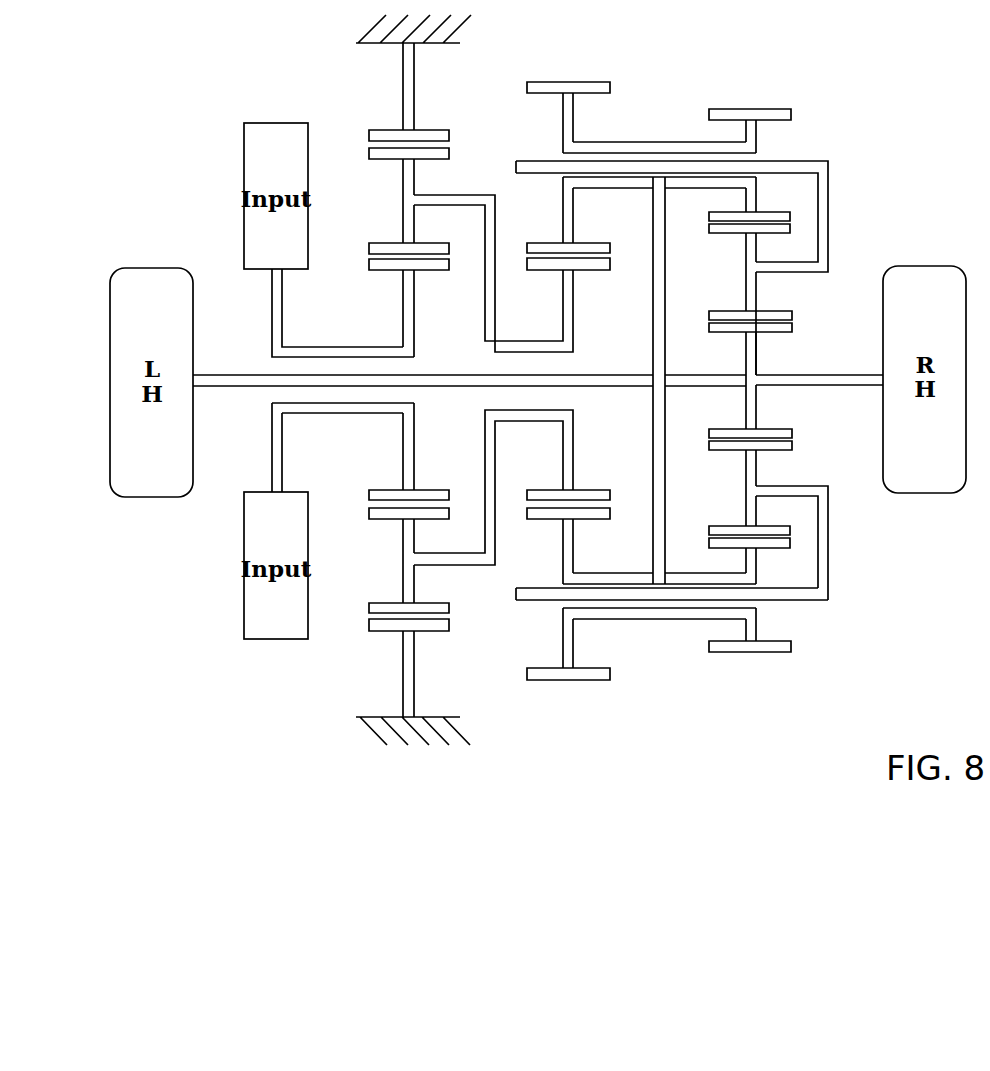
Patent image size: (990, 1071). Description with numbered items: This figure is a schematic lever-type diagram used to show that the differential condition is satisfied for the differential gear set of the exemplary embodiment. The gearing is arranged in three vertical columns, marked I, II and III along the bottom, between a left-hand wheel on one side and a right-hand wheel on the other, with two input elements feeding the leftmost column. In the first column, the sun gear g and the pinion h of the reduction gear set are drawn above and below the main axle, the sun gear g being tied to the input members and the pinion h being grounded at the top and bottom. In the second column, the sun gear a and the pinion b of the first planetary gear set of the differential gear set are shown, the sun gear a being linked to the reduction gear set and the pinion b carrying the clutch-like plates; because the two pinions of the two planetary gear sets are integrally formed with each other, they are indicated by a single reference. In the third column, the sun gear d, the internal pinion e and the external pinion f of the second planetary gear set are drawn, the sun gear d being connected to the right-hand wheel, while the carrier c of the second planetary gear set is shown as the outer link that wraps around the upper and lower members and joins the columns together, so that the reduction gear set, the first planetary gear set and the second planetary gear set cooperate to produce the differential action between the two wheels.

The sun gear of the first planetary gear set a is at (493, 273).
The pinion of the first planetary gear set b is at (641, 223).
The carrier of the second planetary gear set c is at (685, 262).
The sun gear of the second planetary gear set d is at (819, 388).
The internal pinion of the second planetary gear set e is at (750, 331).
The external pinion of the second planetary gear set f is at (750, 114).
The sun gear of the reduction gear set g is at (360, 300).
The pinion of the reduction gear set h is at (413, 129).
The first gear set I is at (413, 750).
The second gear set II is at (641, 432).
The third gear set III is at (750, 695).